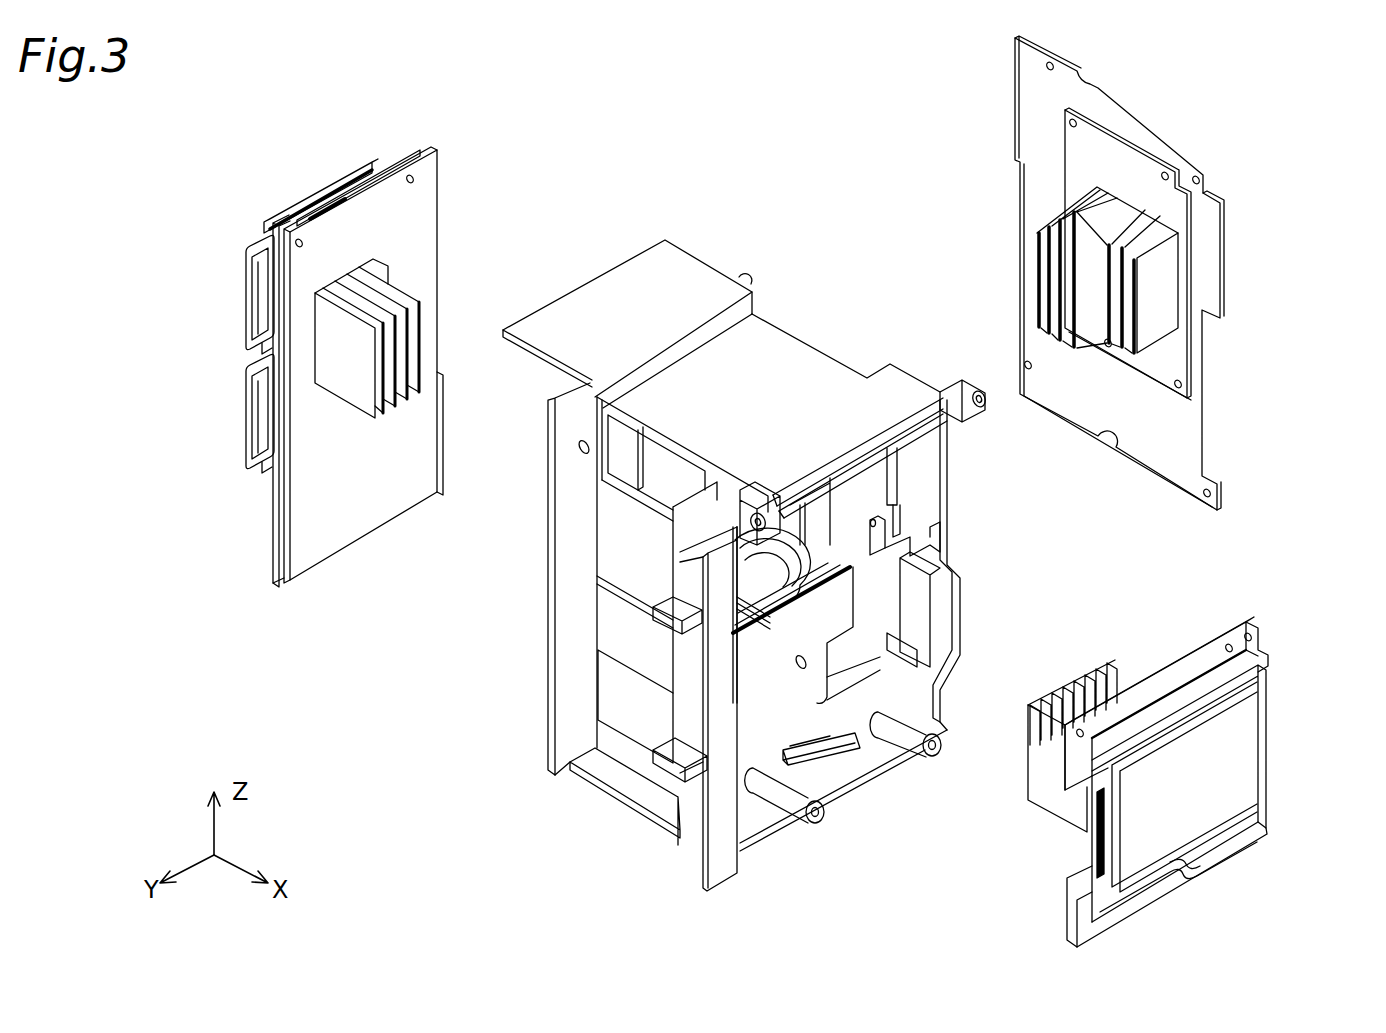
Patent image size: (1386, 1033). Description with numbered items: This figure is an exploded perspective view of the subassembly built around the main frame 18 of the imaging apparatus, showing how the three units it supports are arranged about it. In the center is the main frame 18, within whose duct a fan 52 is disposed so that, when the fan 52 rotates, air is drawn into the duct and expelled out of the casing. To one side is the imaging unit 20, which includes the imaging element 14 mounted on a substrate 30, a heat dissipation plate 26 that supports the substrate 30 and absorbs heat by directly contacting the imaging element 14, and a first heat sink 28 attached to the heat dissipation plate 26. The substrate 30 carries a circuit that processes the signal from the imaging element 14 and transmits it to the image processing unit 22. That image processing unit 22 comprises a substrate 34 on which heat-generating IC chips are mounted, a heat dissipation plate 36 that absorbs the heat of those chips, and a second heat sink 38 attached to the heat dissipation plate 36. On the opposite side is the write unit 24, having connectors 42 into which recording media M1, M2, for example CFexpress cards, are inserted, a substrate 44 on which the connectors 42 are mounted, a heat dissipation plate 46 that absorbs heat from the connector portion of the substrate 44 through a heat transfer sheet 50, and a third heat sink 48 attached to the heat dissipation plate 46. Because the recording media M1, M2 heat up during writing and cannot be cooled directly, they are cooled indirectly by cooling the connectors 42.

The imaging element 14 is at (1250, 780).
The main frame 18 is at (797, 382).
The imaging unit 20 is at (1317, 720).
The image processing unit 22 is at (1270, 158).
The write unit 24 is at (180, 264).
The heat dissipation plate 26 is at (1210, 638).
The heat sink 28 is at (1048, 801).
The substrate 30 is at (1258, 678).
The substrate 34 is at (1026, 218).
The heat dissipation plate 36 is at (1130, 158).
The heat sink 38 is at (1157, 329).
The connectors 42 is at (310, 196).
The substrate 44 is at (278, 527).
The heat dissipation plate 46 is at (365, 512).
The heat sink 48 is at (414, 284).
The heat transfer sheet 50 is at (365, 166).
The fan 52 is at (783, 580).
The recording medium M1 is at (250, 438).
The recording medium M2 is at (250, 318).